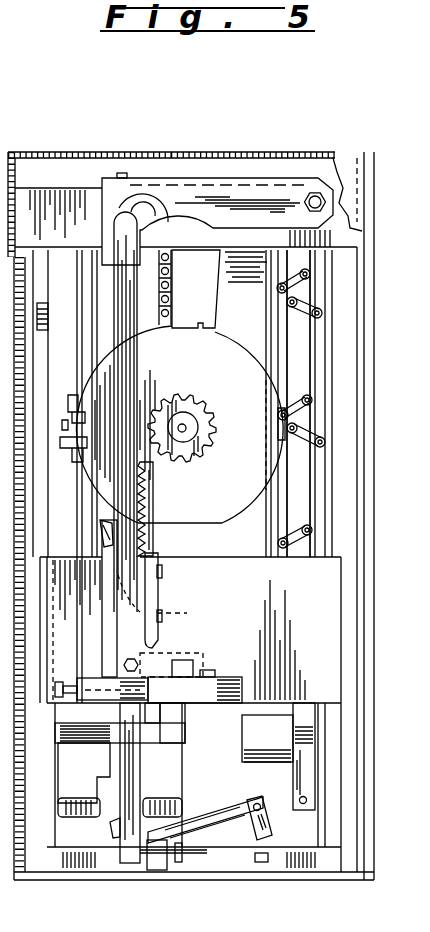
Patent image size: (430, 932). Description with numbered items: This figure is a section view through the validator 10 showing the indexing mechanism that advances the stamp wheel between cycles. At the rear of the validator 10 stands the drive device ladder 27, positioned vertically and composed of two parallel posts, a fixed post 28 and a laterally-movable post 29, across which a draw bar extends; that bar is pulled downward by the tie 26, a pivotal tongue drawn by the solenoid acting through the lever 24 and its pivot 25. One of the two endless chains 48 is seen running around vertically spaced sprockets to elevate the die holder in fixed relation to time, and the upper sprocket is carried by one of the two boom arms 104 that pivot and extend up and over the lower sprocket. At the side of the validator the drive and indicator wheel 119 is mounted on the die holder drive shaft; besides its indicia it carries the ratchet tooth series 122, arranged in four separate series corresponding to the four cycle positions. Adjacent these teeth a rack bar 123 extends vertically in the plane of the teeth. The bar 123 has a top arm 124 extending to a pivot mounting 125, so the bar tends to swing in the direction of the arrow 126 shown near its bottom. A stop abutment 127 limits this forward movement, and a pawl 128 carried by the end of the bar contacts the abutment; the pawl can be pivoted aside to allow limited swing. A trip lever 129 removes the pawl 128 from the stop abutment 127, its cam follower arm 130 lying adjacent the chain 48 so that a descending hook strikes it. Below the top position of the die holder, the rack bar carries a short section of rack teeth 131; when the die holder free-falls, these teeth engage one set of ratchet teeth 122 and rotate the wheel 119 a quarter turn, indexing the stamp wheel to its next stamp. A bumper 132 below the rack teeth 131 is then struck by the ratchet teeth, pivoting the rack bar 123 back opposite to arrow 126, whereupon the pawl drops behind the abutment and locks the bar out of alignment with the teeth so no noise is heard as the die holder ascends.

The validator 10 is at (345, 140).
The lever 24 is at (240, 872).
The pivot 25 is at (268, 833).
The tie 26 is at (312, 810).
The drive device ladder 27 is at (327, 430).
The fixed post 28 is at (322, 467).
The laterally-movable post 29 is at (285, 498).
The endless chain 48 is at (170, 288).
The boom arm 104 is at (222, 298).
The drive and indicator wheel 119 is at (200, 356).
The ratchet tooth series 122 is at (190, 400).
The rack bar 123 is at (130, 387).
The top arm 124 is at (220, 183).
The pivot mounting 125 is at (310, 193).
The arrow 126 is at (142, 773).
The stop abutment 127 is at (218, 673).
The pawl 128 is at (205, 627).
The trip lever 129 is at (105, 666).
The cam follower arm 130 is at (103, 537).
The rack teeth 131 is at (154, 497).
The bumper 132 is at (143, 610).